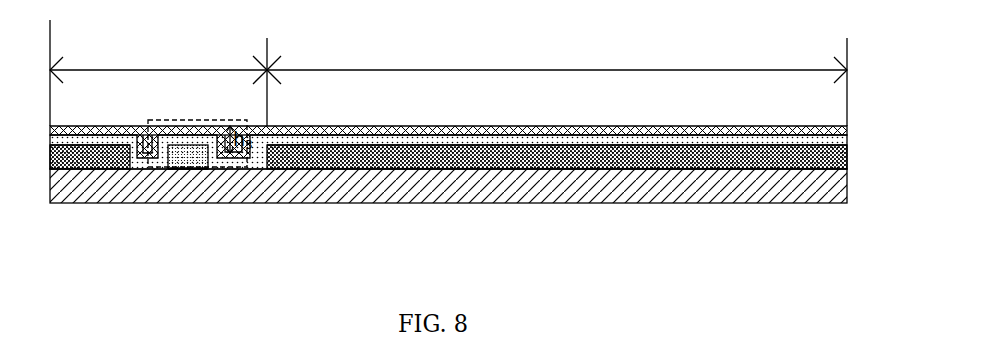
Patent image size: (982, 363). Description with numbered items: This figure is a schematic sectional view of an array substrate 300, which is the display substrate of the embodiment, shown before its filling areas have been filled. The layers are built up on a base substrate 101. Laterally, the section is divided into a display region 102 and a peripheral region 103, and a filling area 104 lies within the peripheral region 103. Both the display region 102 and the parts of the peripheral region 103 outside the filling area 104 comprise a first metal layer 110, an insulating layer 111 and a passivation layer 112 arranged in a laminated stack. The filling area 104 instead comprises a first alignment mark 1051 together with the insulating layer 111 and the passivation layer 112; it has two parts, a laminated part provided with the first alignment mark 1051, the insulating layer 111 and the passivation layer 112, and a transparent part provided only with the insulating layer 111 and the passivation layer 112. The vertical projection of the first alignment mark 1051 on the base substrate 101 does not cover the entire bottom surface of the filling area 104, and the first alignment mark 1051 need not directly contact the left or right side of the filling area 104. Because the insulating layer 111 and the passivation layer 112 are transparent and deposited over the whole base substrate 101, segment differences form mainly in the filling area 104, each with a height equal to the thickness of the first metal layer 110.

The base substrate 101 is at (692, 176).
The display region 102 is at (495, 70).
The peripheral region 103 is at (108, 69).
The filling area 104 is at (228, 119).
The first metal layer 110 is at (607, 170).
The insulating layer 111 is at (327, 170).
The passivation layer 112 is at (836, 121).
The array substrate 300 is at (458, 255).
The first alignment mark 1051 is at (190, 170).